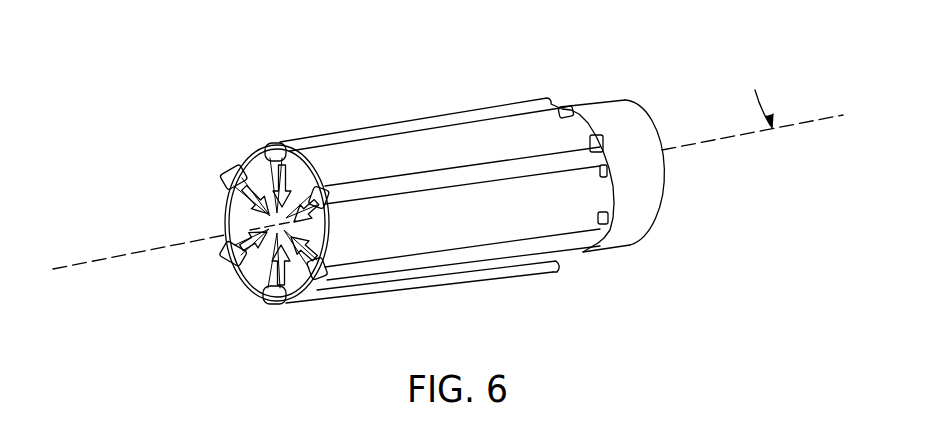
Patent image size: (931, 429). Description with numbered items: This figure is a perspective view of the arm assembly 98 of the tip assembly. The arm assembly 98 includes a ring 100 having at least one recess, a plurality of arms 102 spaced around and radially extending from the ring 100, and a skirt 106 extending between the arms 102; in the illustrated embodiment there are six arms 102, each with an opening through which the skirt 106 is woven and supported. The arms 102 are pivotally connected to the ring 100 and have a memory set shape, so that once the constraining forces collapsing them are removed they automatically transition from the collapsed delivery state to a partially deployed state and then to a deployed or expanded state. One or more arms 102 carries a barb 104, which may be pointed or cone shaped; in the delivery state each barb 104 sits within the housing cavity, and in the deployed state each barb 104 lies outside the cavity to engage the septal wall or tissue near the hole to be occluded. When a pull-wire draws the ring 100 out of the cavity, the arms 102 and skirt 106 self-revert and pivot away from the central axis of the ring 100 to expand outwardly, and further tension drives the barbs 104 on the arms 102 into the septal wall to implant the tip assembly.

The arm assembly 98 is at (448, 193).
The ring 100 is at (672, 182).
The arms 102 is at (302, 140).
The barb 104 is at (312, 172).
The skirt 106 is at (550, 216).